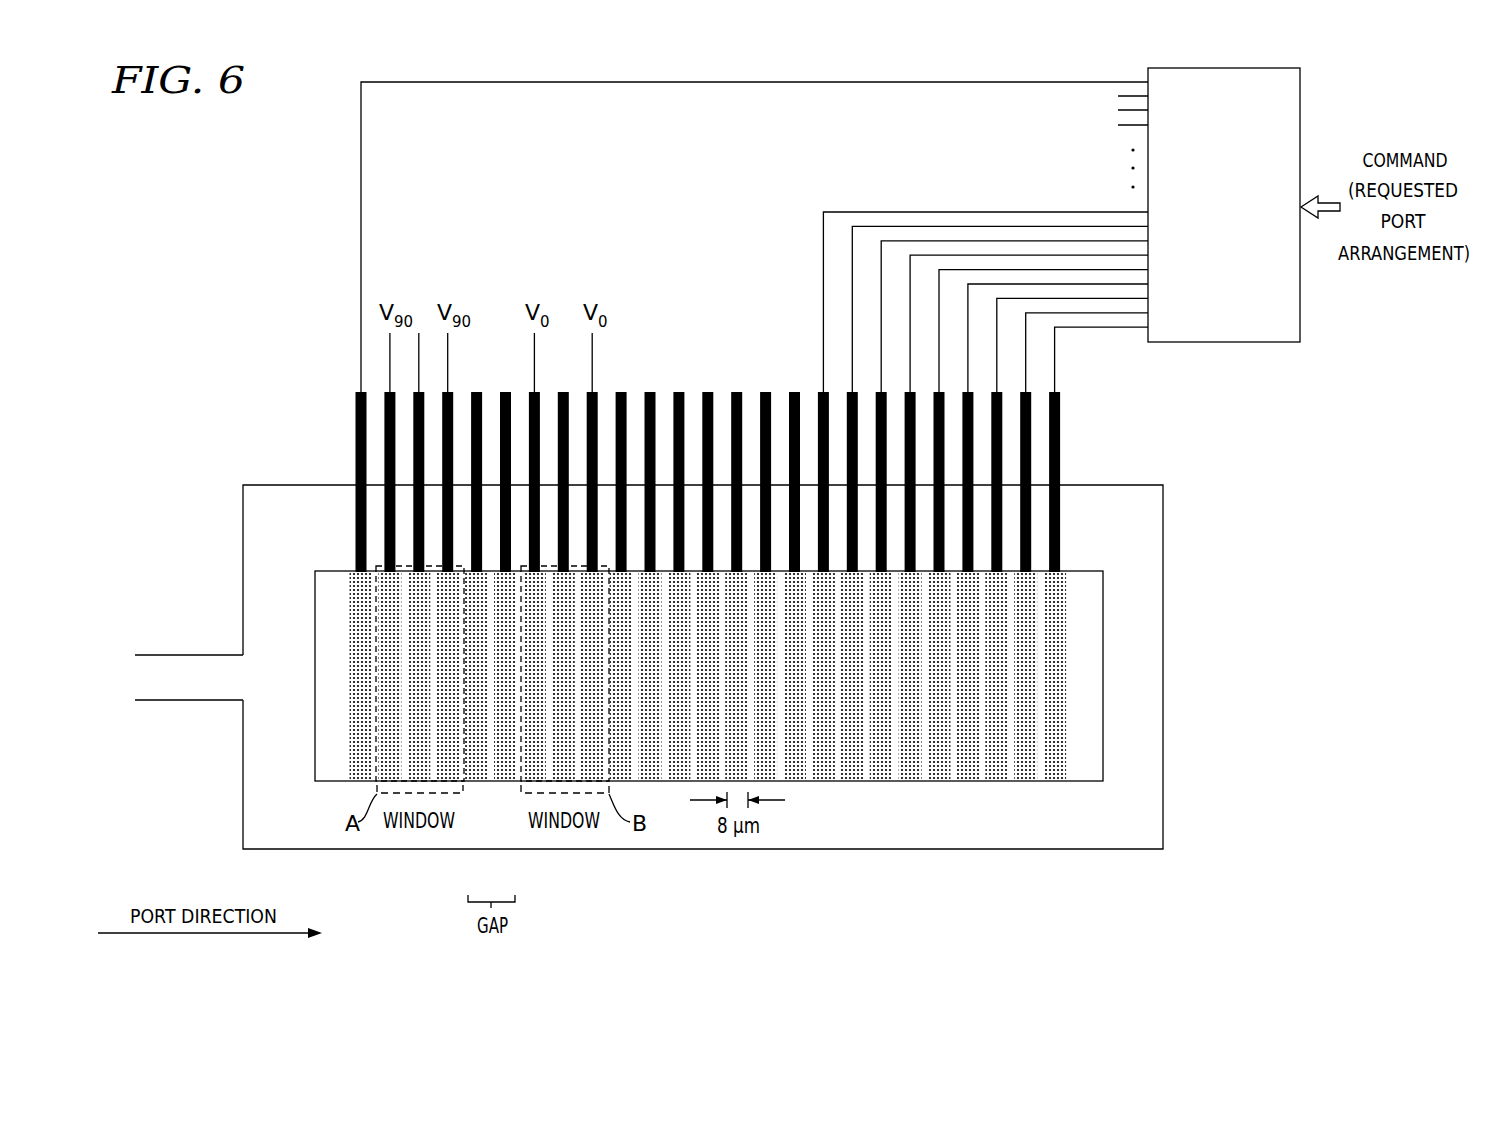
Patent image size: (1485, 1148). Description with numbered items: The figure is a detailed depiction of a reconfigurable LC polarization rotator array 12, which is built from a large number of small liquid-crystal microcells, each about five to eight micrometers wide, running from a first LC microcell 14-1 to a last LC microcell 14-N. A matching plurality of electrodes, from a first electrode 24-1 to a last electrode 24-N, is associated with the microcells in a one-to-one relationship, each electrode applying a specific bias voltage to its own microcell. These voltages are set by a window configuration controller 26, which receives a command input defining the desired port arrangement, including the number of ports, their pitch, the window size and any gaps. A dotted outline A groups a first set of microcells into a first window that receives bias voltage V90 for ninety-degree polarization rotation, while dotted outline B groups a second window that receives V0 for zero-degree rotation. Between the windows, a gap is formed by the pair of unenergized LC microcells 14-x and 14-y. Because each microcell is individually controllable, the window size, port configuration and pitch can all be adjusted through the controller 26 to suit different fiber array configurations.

The reconfigurable LC polarization rotator array 12 is at (230, 161).
The window configuration controller 26 is at (1300, 100).
The electrode 24-1 is at (356, 427).
The electrode 24-N is at (1061, 430).
The LC microcell 14-1 is at (359, 781).
The LC microcell 14-N is at (1058, 781).
The LC microcell 14-x is at (477, 782).
The LC microcell 14-y is at (503, 782).